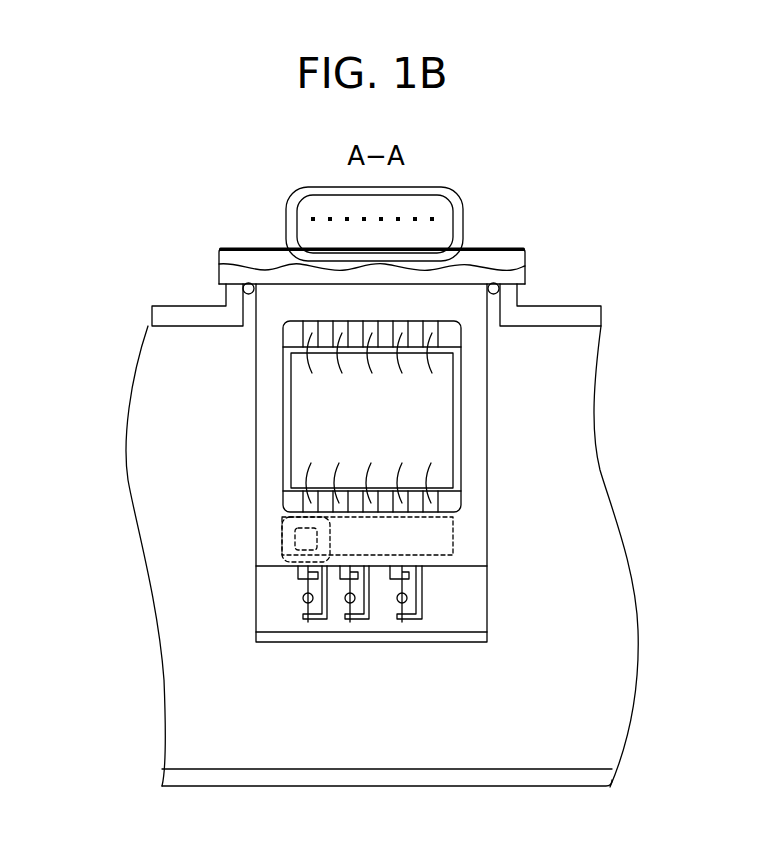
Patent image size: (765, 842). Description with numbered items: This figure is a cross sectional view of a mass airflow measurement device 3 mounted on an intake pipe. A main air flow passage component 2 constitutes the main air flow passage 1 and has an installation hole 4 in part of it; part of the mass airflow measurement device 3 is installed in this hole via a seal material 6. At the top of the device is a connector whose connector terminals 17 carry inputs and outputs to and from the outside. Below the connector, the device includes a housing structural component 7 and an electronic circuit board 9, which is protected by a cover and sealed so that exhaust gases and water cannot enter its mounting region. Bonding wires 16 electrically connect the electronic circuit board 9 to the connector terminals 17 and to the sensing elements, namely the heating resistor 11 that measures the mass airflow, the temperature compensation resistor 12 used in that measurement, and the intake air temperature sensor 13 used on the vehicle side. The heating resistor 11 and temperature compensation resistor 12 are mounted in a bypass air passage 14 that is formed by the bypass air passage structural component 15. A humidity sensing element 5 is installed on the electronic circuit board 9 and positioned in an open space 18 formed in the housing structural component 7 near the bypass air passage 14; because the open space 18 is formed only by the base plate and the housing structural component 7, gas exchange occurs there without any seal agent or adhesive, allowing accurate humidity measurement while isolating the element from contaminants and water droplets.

The main air flow passage 1 is at (582, 373).
The main air flow passage component 2 is at (595, 312).
The mass airflow measurement device 3 is at (463, 208).
The installation hole 4 is at (232, 302).
The humidity sensing element 5 is at (297, 532).
The seal material 6 is at (252, 313).
The housing structural component 7 is at (468, 287).
The electronic circuit board 9 is at (412, 422).
The heating resistor 11 is at (405, 603).
The temperature compensation resistor 12 is at (347, 603).
The intake air temperature sensor 13 is at (302, 596).
The bypass air passage 14 is at (458, 597).
The bypass air passage structural component 15 is at (368, 638).
The bonding wires 16 is at (303, 357).
The connector terminals 17 is at (311, 219).
The open space 18 is at (297, 513).